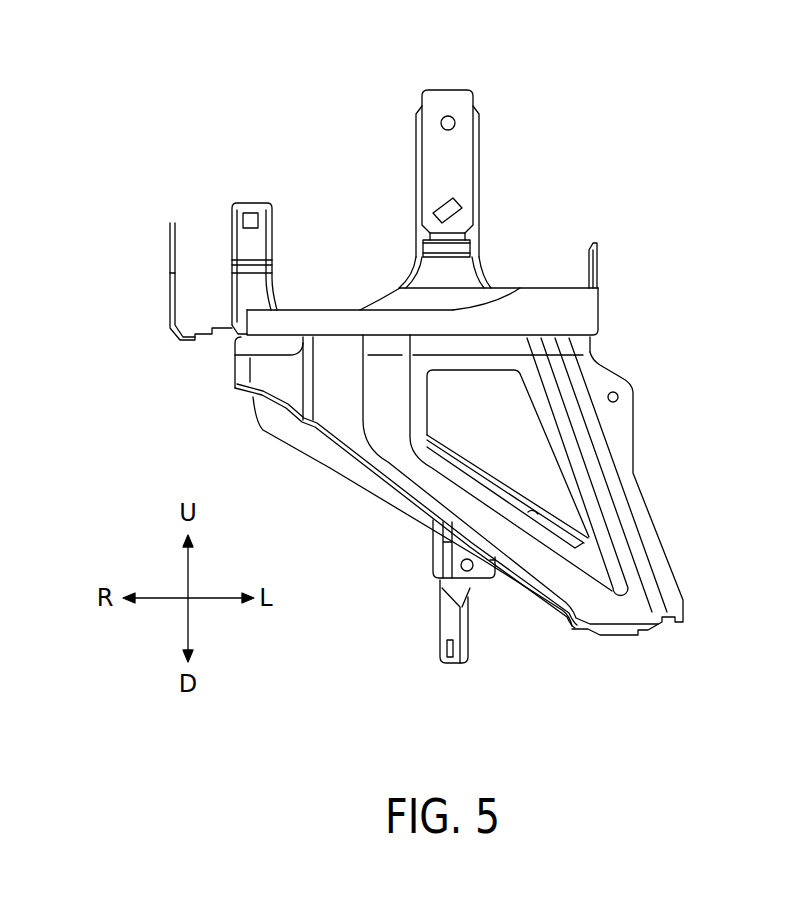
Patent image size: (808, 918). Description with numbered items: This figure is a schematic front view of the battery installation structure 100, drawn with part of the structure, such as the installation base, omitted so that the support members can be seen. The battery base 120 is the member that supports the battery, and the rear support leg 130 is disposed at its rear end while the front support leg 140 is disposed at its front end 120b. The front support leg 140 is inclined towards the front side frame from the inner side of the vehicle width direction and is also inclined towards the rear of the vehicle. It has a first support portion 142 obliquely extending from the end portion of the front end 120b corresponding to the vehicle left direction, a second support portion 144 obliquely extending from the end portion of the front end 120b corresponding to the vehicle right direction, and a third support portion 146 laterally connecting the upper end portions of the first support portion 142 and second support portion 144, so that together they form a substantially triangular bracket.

The battery installation structure 100 is at (646, 241).
The battery base 120 is at (537, 302).
The front end 120b is at (572, 313).
The rear support leg 130 is at (323, 448).
The front support leg 140 is at (676, 526).
The first support portion 142 is at (598, 466).
The second support portion 144 is at (413, 483).
The third support portion 146 is at (493, 347).